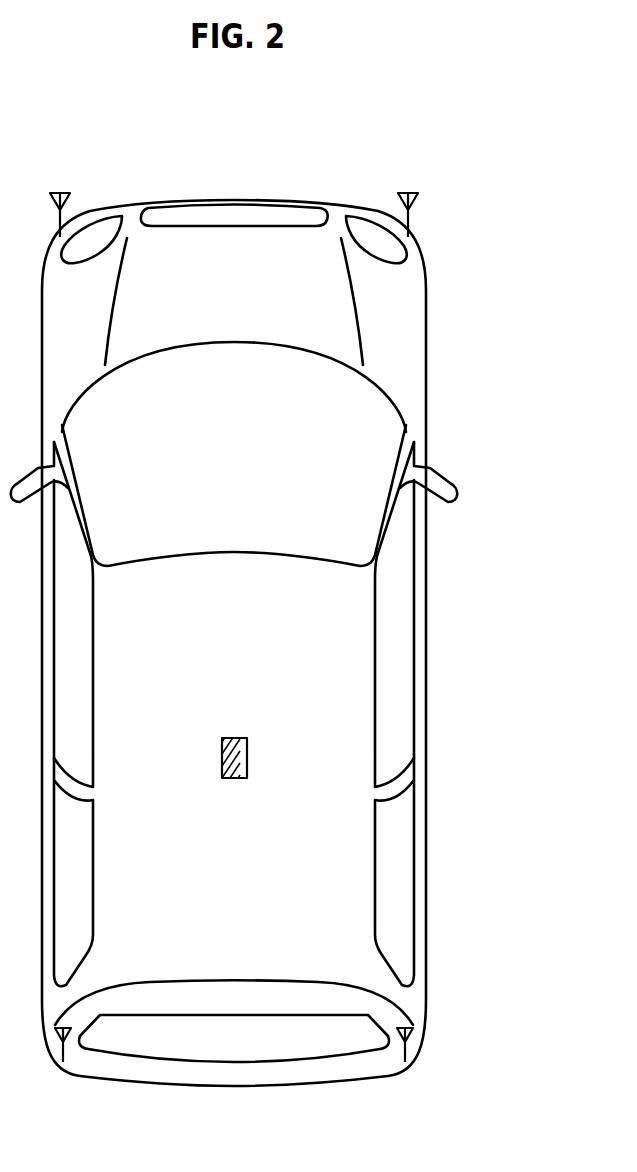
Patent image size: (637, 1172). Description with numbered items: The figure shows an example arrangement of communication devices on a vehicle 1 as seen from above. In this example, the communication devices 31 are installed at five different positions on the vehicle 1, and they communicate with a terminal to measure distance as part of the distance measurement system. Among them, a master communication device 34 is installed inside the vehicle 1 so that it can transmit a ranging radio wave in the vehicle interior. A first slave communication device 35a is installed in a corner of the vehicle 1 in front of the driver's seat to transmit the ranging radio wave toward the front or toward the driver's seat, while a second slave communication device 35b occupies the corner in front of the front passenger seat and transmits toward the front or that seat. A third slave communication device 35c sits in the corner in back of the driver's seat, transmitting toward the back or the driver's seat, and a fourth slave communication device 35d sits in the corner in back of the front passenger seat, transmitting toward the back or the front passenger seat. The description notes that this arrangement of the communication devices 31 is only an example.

The vehicle 1 is at (427, 367).
The communication device 31 is at (291, 640).
The master communication device 34 is at (233, 782).
The first slave communication device 35a is at (413, 192).
The second slave communication device 35b is at (61, 192).
The third slave communication device 35c is at (418, 1053).
The fourth slave communication device 35d is at (65, 1053).